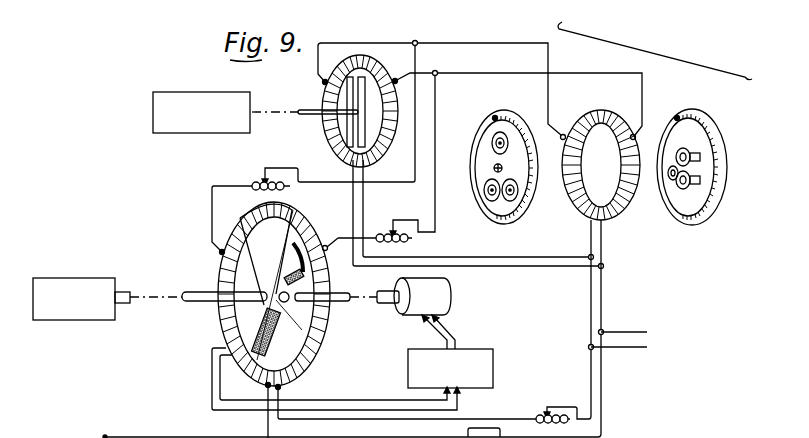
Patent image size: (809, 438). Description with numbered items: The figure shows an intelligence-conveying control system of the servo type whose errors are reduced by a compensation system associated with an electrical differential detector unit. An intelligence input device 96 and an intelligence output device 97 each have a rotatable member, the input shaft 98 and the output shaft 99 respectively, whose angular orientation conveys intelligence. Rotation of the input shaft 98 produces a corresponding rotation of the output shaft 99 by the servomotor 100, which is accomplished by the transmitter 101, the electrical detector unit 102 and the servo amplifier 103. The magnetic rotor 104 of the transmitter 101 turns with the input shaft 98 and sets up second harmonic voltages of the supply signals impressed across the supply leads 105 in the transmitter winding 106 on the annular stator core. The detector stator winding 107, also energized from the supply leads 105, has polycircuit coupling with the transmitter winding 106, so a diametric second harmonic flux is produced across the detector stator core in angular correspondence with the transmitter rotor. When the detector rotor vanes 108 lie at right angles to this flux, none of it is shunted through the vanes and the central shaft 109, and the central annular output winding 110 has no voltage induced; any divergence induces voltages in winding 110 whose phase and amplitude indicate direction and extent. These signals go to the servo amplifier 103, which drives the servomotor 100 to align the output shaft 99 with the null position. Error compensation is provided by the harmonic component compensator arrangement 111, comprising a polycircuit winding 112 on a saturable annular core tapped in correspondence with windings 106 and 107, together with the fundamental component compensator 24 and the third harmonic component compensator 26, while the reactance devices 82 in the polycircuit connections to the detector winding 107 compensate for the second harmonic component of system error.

The fundamental component compensator 24 is at (712, 112).
The third harmonic component compensator 26 is at (480, 122).
The reactance device 82 is at (262, 168).
The intelligence input device 96 is at (211, 92).
The intelligence output device 97 is at (83, 280).
The input shaft 98 is at (315, 110).
The output shaft 99 is at (185, 294).
The servomotor 100 is at (443, 296).
The transmitter 101 is at (322, 137).
The electrical detector unit 102 is at (310, 228).
The servo amplifier 103 is at (481, 352).
The magnetic rotor 104 is at (347, 90).
The supply leads 105 is at (622, 347).
The transmitter winding 106 is at (381, 151).
The detector stator winding 107 is at (318, 348).
The detector rotor vanes 108 is at (257, 215).
The central shaft 109 is at (280, 295).
The central annular output winding 110 is at (263, 333).
The harmonic component compensator arrangement 111 is at (675, 263).
The polycircuit winding 112 is at (583, 120).